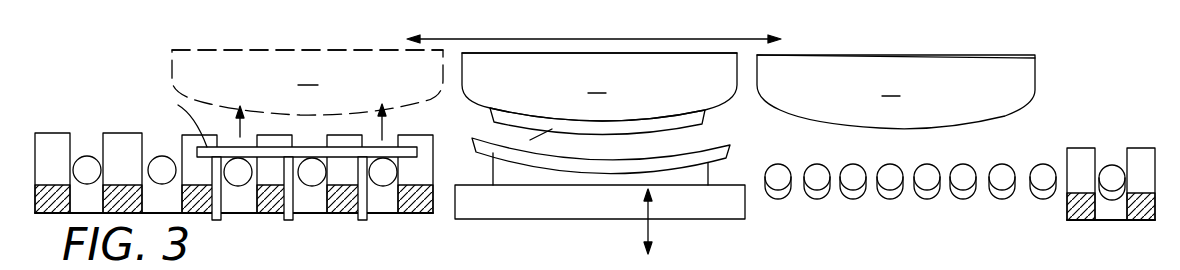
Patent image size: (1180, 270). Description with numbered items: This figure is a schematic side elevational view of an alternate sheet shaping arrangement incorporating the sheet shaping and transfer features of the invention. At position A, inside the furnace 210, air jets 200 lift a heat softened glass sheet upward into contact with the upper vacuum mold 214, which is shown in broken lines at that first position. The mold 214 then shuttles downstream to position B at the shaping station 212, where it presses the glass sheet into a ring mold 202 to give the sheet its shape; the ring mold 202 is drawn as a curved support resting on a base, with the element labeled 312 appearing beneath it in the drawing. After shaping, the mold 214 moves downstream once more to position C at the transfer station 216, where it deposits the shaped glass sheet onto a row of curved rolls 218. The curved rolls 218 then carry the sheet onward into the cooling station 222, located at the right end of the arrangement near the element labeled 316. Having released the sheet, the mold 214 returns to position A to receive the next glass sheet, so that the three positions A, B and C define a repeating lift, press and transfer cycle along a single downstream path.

The furnace 210 is at (330, 31).
The shaping station 212 is at (625, 32).
The upper vacuum mold 214 is at (228, 50).
The transfer station 216 is at (940, 48).
The cooling station 222 is at (1118, 80).
The air jets 200 is at (222, 202).
The ring mold 202 is at (707, 143).
The curved rolls 218 is at (921, 196).
The base plate 312 is at (600, 227).
The workpiece rack 316 is at (1050, 209).